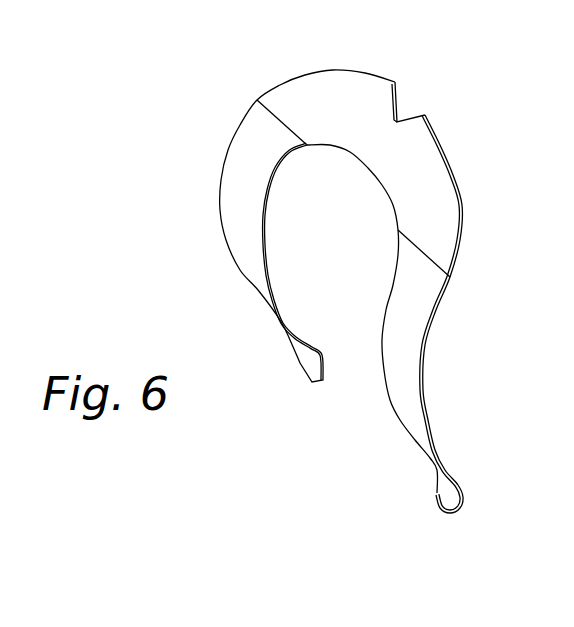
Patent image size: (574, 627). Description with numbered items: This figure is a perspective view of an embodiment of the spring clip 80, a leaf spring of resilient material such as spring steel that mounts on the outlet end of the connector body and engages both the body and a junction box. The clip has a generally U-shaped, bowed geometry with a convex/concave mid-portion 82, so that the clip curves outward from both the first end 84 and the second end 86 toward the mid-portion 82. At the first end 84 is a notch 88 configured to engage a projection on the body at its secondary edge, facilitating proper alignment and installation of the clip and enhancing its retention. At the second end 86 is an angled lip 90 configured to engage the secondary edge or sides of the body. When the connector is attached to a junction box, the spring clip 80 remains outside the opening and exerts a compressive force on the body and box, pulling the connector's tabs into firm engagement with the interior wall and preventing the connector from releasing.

The spring clip 80 is at (216, 113).
The mid-portion 82 is at (228, 191).
The first end 84 is at (330, 70).
The second end 86 is at (352, 375).
The notch 88 is at (398, 100).
The angled lip 90 is at (312, 367).